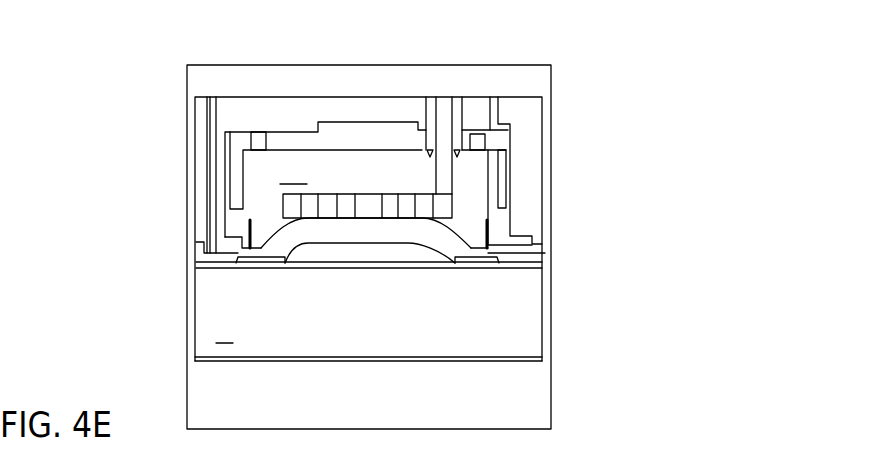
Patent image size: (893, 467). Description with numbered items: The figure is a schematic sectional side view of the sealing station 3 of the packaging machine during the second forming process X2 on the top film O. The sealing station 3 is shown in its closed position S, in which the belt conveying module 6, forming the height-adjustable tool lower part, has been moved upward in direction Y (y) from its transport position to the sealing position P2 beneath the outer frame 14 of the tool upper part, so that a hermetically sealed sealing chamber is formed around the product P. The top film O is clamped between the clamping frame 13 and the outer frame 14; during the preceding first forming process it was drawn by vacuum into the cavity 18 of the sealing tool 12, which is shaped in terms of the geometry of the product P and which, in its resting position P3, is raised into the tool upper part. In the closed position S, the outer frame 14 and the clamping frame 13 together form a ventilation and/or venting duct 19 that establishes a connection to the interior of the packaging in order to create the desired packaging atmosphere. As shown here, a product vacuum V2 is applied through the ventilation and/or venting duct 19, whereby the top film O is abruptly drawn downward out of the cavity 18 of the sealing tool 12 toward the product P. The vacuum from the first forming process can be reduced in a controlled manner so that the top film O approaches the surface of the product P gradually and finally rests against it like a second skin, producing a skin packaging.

The sealing station 3 is at (263, 59).
The outer frame 14 is at (195, 118).
The ventilation and/or venting duct 19 is at (210, 187).
The clamping frame 13 is at (198, 260).
The product vacuum V2 is at (211, 270).
The sealing tool 12 is at (383, 172).
The cavity 18 is at (332, 228).
The resting position P3 is at (383, 172).
The product P is at (435, 257).
The top film O is at (412, 244).
The belt conveying module 6 is at (224, 329).
The second forming process X2 is at (304, 262).
The closed position S is at (340, 285).
The direction Y y is at (369, 326).
The sealing position P2 is at (465, 373).